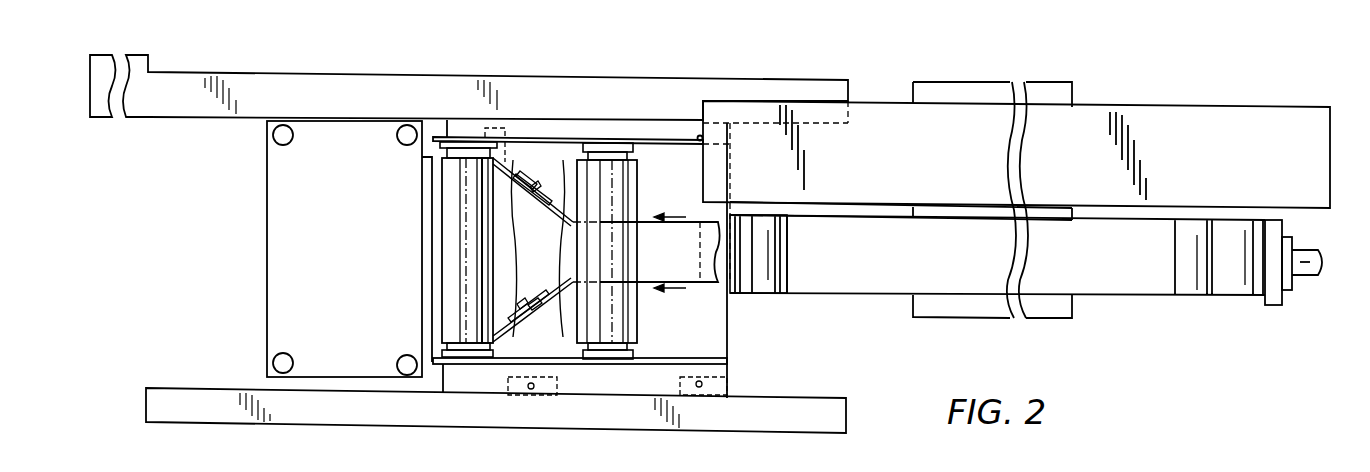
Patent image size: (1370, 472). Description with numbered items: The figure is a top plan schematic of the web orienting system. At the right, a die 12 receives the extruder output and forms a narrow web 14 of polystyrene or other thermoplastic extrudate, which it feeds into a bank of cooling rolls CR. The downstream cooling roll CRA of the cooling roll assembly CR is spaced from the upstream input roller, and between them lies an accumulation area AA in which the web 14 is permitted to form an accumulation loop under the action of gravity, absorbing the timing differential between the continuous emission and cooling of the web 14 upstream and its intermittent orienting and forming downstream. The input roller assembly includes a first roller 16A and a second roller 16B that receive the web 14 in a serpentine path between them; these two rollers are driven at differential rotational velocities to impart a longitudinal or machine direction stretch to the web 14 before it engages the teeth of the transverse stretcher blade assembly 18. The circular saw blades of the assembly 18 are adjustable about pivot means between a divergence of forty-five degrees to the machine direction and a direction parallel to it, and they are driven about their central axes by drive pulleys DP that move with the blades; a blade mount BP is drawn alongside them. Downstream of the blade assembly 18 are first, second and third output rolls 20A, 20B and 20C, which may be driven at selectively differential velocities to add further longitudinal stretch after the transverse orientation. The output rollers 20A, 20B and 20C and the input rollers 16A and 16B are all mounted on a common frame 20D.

The die 12 is at (1276, 306).
The web 14 is at (514, 212).
The first roller 16A is at (637, 352).
The second roller 16B is at (583, 352).
The transverse stretcher blade assembly 18 is at (513, 177).
The first output roll 20A is at (490, 288).
The second output roll 20B is at (468, 270).
The third output roll 20C is at (450, 333).
The common frame 20D is at (475, 370).
The drive pulleys DP is at (536, 183).
The bearing plate BP is at (538, 318).
The downstream cooling roll CRA is at (737, 294).
The cooling rolls CR is at (853, 302).
The accumulation area AA is at (682, 194).